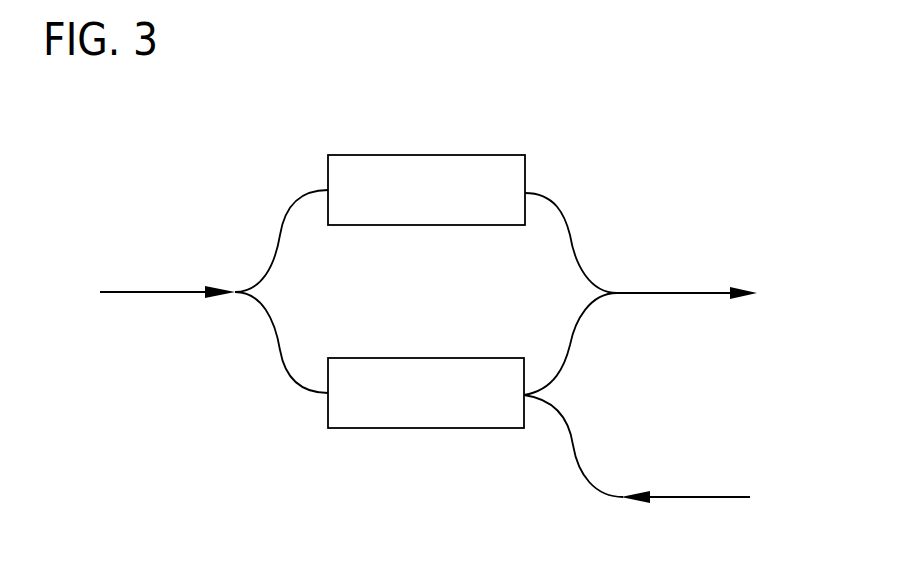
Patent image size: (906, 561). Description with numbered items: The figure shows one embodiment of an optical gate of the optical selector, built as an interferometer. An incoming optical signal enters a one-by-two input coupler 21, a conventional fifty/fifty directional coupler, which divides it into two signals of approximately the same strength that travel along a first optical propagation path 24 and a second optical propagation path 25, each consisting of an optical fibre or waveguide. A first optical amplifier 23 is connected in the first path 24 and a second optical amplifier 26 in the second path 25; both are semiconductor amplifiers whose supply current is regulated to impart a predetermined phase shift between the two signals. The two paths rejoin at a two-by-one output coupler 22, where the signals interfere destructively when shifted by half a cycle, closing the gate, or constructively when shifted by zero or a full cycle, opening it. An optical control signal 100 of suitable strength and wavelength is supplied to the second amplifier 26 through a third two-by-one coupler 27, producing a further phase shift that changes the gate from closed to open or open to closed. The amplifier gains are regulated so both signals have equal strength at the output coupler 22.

The 1×2 input coupler 21 is at (237, 294).
The 2×1 output coupler 22 is at (618, 293).
The first optical amplifier 23 is at (438, 225).
The first optical propagation path 24 is at (285, 215).
The second optical propagation path 25 is at (283, 368).
The second optical amplifier 26 is at (437, 428).
The third 2×1 coupler 27 is at (524, 395).
The optical control signal 100 is at (682, 497).